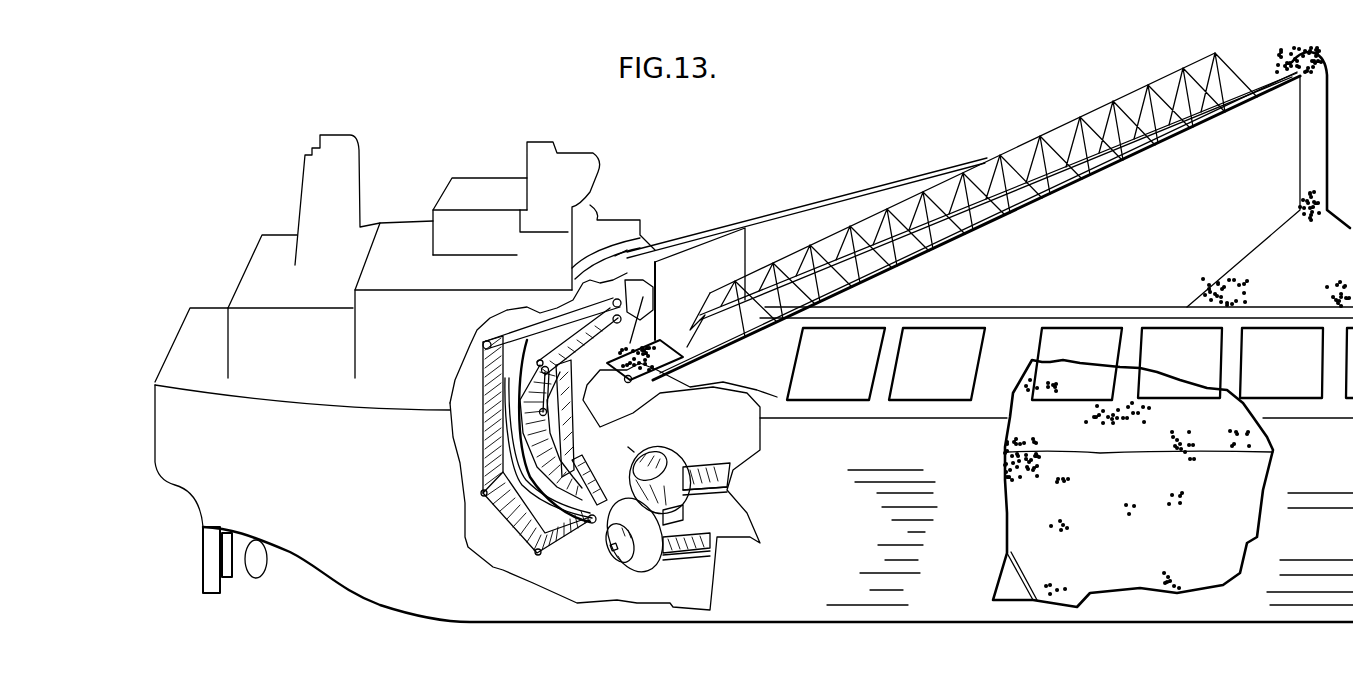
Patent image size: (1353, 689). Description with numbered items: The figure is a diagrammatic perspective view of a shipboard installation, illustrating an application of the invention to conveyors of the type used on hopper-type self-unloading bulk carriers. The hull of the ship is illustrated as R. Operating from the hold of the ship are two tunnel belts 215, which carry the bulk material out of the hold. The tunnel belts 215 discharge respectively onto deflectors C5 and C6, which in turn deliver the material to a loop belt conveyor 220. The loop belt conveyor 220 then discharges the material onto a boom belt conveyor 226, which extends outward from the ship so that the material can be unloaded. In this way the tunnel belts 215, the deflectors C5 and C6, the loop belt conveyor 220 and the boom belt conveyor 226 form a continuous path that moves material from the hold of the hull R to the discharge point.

The boom belt conveyor 226 is at (747, 297).
The tunnel belts 215 is at (703, 553).
The loop belt conveyor 220 is at (592, 522).
The deflector C6 is at (663, 447).
The deflector C5 is at (647, 550).
The hull of the ship R is at (418, 608).